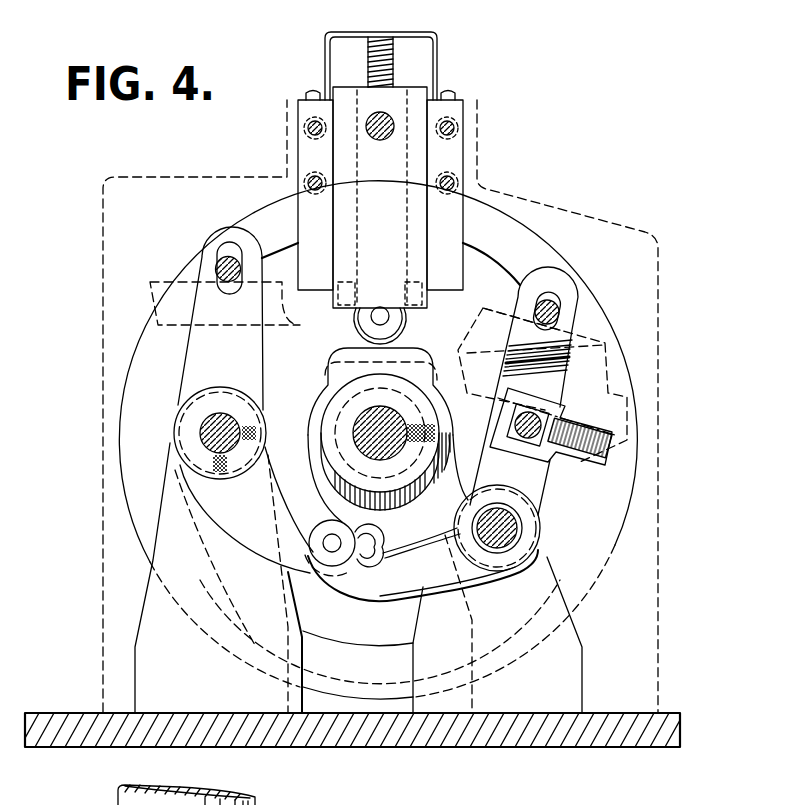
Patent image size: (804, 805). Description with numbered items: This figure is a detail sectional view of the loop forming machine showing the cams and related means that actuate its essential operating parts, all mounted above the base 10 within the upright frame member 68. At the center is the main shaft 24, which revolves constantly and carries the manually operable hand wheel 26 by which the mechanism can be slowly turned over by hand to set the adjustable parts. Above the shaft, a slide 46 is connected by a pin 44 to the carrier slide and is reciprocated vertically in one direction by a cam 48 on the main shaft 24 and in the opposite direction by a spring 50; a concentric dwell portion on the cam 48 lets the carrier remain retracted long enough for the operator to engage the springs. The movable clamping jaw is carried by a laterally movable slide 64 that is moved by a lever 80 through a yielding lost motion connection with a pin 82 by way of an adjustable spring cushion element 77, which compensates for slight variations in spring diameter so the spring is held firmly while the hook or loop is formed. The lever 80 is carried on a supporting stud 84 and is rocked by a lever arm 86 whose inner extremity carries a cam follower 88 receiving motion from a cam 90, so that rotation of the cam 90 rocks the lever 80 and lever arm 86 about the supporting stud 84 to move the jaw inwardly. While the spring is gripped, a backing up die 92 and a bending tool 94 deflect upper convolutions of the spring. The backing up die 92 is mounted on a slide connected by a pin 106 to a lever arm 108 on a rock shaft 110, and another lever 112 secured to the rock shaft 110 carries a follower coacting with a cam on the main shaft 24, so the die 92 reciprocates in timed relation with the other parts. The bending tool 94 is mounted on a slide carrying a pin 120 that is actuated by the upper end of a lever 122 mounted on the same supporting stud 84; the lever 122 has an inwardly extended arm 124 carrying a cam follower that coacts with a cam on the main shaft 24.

The base 10 is at (625, 748).
The main shaft 24 is at (370, 423).
The hand wheel 26 is at (137, 400).
The pin 44 is at (390, 115).
The slide 46 is at (392, 155).
The cam 48 is at (337, 361).
The spring 50 is at (368, 70).
The slide 64 is at (620, 405).
The upright frame member 68 is at (178, 177).
The cushion element 77 is at (573, 468).
The lever 80 is at (542, 467).
The pin 82 is at (513, 437).
The supporting stud 84 is at (520, 540).
The lever arm 86 is at (398, 642).
The cam follower 88 is at (313, 518).
The cam 90 is at (415, 582).
The backing up die 92 is at (152, 288).
The bending tool 94 is at (600, 355).
The pin 106 is at (217, 258).
The lever arm 108 is at (203, 362).
The rock shaft 110 is at (200, 435).
The lever 112 is at (223, 510).
The pin 120 is at (557, 312).
The lever 122 is at (557, 280).
The arm 124 is at (475, 593).